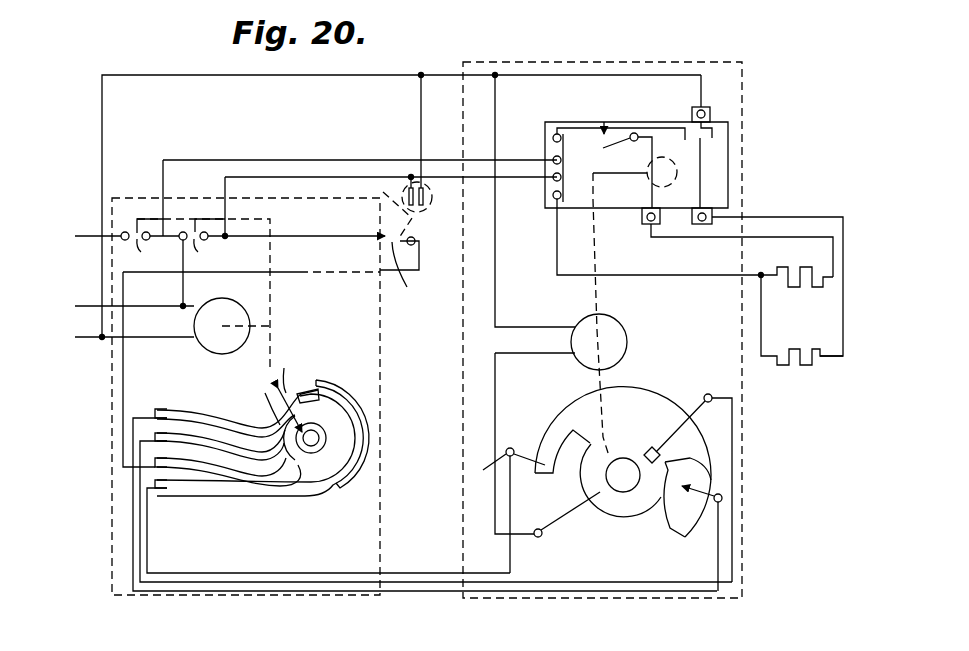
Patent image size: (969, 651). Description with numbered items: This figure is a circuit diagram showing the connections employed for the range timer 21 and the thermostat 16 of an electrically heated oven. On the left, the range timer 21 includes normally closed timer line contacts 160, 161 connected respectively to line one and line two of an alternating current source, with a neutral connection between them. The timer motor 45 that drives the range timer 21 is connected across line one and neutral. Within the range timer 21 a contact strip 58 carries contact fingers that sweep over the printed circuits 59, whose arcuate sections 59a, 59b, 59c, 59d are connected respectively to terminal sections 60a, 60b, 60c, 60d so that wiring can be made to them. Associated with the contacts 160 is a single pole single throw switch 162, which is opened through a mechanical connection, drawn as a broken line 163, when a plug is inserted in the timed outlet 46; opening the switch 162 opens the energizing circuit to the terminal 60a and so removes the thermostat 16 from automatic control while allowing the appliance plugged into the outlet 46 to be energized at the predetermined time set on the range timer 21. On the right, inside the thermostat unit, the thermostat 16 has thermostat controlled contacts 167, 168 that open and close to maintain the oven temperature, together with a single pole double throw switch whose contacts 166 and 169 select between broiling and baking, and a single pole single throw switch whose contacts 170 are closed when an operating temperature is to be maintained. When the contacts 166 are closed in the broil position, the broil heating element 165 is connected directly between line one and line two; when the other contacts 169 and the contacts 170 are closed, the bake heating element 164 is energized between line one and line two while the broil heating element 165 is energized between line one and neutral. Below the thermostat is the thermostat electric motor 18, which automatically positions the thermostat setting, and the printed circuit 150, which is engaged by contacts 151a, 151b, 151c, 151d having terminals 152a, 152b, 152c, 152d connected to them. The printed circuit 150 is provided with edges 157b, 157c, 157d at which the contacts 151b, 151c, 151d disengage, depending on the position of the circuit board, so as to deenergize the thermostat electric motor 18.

The range timer 21 is at (138, 176).
The timer line contact 161 is at (144, 242).
The timer line contact 160 is at (202, 242).
The timer motor 45 is at (222, 298).
The contact strip 58 is at (264, 392).
The printed circuits 59 is at (237, 404).
The arcuate section 59a is at (318, 449).
The arcuate section 59b is at (305, 424).
The arcuate section 59c is at (284, 370).
The arcuate section 59d is at (345, 391).
The terminal section 60a is at (172, 458).
The terminal section 60b is at (170, 437).
The terminal section 60c is at (162, 408).
The terminal section 60d is at (165, 492).
The mechanical connection 163 is at (381, 207).
The timed outlet 46 is at (441, 200).
The single pole single throw switch 162 is at (414, 271).
The thermostat 16 is at (528, 122).
The thermostat controlled contact 168 is at (552, 141).
The thermostat controlled contact 167 is at (553, 186).
The single pole single throw switch contacts 170 is at (632, 142).
The contacts of single pole double throw switch 166 is at (692, 143).
The contacts of single pole double throw switch 169 is at (712, 141).
The bake heating element 164 is at (804, 267).
The broil heating element 165 is at (808, 332).
The thermostat electric motor 18 is at (626, 329).
The printed circuit 150 is at (627, 392).
The contact 151a is at (602, 489).
The contact 151b is at (663, 456).
The contact 151c is at (681, 484).
The contact 151d is at (543, 461).
The terminal 152a is at (537, 537).
The terminal 152b is at (706, 395).
The terminal 152c is at (722, 500).
The terminal 152d is at (483, 470).
The edge 157b is at (648, 450).
The edge 157c is at (670, 465).
The edge 157d is at (673, 530).